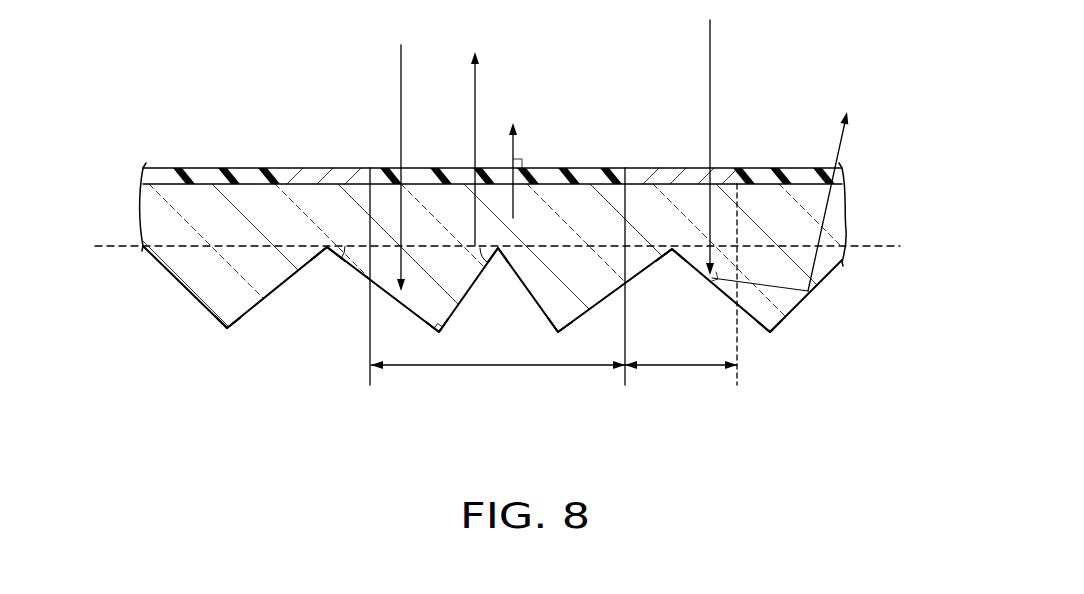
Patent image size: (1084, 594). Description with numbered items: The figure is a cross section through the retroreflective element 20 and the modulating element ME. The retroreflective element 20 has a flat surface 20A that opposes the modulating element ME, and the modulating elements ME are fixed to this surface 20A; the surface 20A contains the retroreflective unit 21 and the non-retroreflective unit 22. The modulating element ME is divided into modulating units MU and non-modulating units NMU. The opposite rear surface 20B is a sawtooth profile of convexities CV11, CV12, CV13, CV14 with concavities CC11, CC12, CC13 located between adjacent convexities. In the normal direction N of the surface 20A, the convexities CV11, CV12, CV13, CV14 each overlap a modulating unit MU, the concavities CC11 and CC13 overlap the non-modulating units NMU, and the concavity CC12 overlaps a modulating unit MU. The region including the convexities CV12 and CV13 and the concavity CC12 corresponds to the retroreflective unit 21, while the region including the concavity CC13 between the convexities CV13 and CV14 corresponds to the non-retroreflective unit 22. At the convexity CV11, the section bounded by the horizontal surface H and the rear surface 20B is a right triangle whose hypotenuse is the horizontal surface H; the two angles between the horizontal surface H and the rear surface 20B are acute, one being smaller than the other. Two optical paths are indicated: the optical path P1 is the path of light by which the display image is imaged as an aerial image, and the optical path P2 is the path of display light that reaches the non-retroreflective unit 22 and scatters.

The retroreflective element 20 is at (826, 232).
The surface 20A is at (225, 168).
The rear surface 20B is at (183, 297).
The modulating unit MU is at (578, 168).
The non-modulating unit NMU is at (665, 168).
The modulating element ME is at (845, 177).
The horizontal surface H is at (122, 244).
The optical path P1 is at (476, 134).
The optical path P2 is at (836, 188).
The normal direction N is at (514, 157).
The concavity CC11 is at (325, 260).
The concavity CC12 is at (503, 262).
The concavity CC13 is at (672, 264).
The convexity CV11 is at (224, 343).
The convexity CV12 is at (437, 345).
The convexity CV13 is at (556, 348).
The convexity CV14 is at (769, 347).
The retroreflective unit 21 is at (497, 368).
The non-retroreflective unit 22 is at (683, 368).